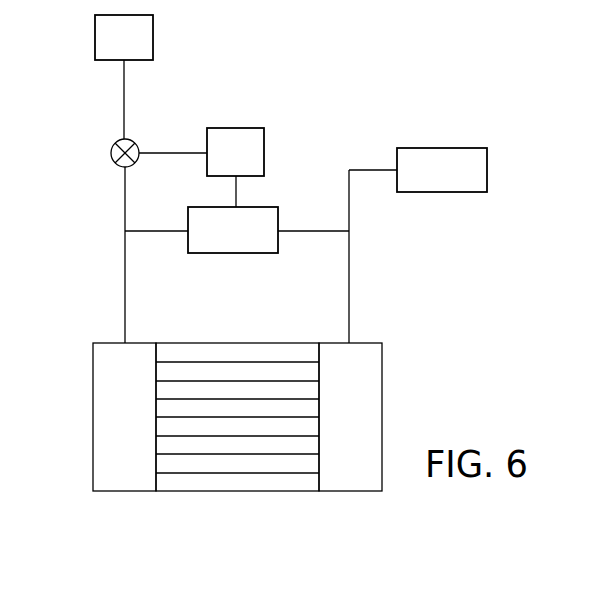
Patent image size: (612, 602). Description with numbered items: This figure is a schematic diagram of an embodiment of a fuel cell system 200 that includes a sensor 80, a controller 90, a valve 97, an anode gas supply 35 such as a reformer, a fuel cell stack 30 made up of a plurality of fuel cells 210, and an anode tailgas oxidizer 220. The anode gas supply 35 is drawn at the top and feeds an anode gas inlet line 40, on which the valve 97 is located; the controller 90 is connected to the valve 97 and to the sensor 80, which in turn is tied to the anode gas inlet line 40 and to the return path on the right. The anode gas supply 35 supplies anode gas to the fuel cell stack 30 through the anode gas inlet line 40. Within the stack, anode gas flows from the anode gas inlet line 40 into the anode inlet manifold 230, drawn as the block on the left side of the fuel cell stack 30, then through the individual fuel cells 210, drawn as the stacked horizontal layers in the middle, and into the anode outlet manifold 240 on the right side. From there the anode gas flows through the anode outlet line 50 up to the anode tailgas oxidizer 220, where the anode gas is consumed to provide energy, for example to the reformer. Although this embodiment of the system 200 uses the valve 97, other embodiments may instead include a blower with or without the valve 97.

The fuel cell system 200 is at (350, 88).
The anode gas supply 35 is at (110, 51).
The valve 97 is at (113, 147).
The controller 90 is at (222, 166).
The sensor 80 is at (219, 243).
The anode gas inlet line 40 is at (125, 193).
The anode outlet line 50 is at (350, 291).
The anode tailgas oxidizer 220 is at (420, 182).
The fuel cell stack 30 is at (234, 437).
The anode inlet manifold 230 is at (103, 364).
The anode outlet manifold 240 is at (370, 373).
The fuel cells 210 is at (165, 460).